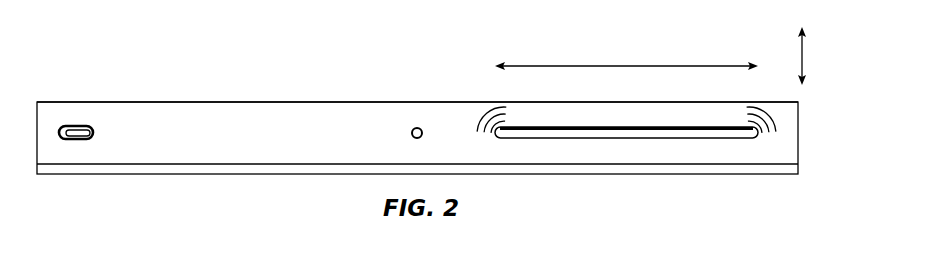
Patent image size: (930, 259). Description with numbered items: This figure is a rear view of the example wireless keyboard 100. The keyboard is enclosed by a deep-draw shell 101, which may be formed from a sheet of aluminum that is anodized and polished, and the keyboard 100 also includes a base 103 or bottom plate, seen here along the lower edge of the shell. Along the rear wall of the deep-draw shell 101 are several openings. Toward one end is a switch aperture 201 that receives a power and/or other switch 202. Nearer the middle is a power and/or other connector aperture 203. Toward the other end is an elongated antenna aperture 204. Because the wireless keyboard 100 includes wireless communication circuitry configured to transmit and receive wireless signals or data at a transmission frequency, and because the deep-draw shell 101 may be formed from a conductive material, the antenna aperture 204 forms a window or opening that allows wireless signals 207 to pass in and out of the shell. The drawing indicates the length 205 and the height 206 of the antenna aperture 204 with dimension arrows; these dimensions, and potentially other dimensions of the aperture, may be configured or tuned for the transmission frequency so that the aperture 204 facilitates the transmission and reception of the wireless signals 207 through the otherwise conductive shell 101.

The wireless keyboard 100 is at (167, 191).
The deep-draw shell 101 is at (63, 101).
The base 103 is at (798, 171).
The switch aperture 201 is at (60, 130).
The switch 202 is at (72, 135).
The connector aperture 203 is at (417, 127).
The antenna aperture 204 is at (773, 131).
The length 205 is at (635, 65).
The height 206 is at (806, 56).
The wireless signals 207 is at (775, 118).